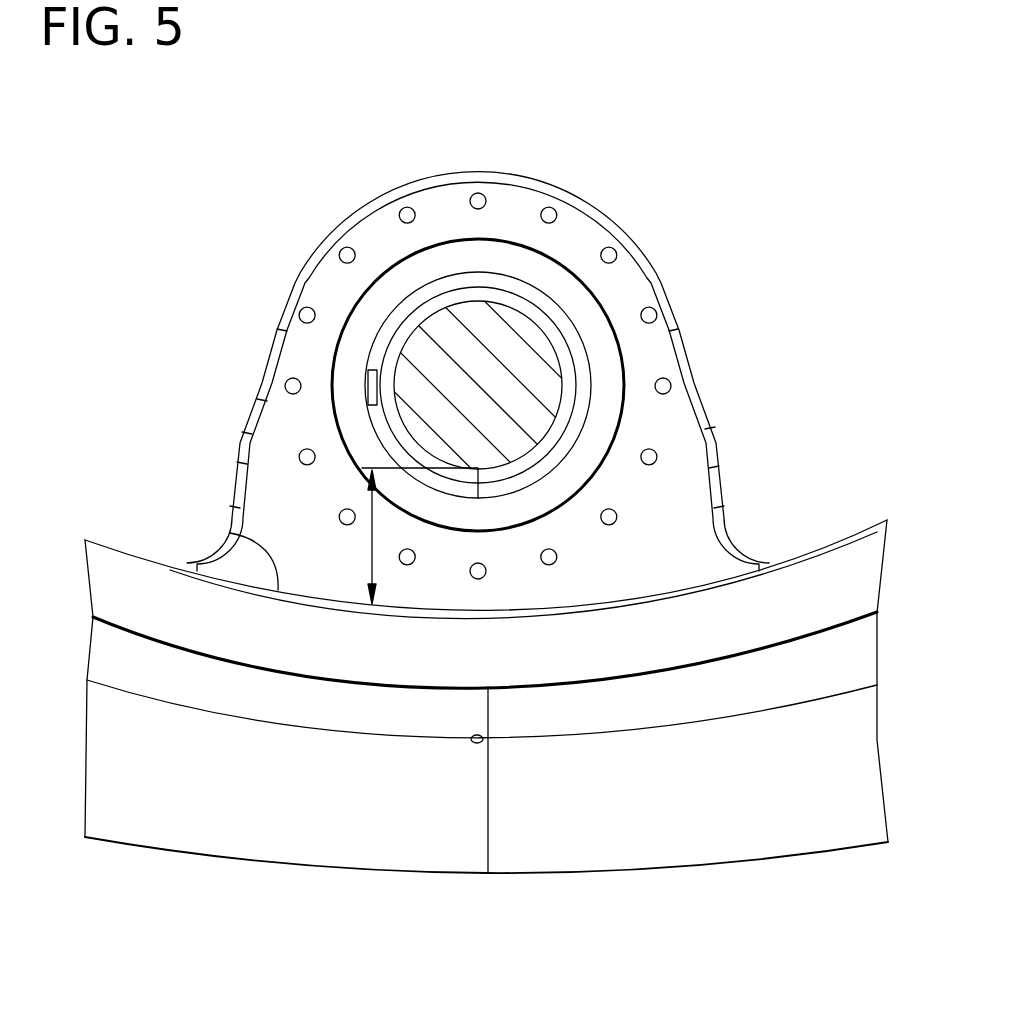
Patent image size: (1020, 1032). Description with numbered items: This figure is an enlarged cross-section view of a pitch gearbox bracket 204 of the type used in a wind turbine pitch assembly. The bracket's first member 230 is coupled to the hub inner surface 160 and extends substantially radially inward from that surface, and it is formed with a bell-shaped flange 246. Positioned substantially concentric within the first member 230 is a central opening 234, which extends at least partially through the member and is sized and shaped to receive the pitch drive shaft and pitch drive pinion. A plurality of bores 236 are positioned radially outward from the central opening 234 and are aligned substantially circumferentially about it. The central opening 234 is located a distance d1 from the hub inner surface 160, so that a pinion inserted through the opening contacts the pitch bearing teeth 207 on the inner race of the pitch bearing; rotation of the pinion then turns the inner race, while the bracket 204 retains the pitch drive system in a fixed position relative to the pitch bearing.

The hub inner surface 160 is at (847, 540).
The pitch gearbox bracket 204 is at (580, 152).
The first member 230 is at (645, 265).
The central opening 234 is at (560, 385).
The bores 236 is at (658, 454).
The bell-shaped flange 246 is at (258, 397).
The pitch bearing teeth 207 is at (230, 533).
The distance d1 is at (372, 540).